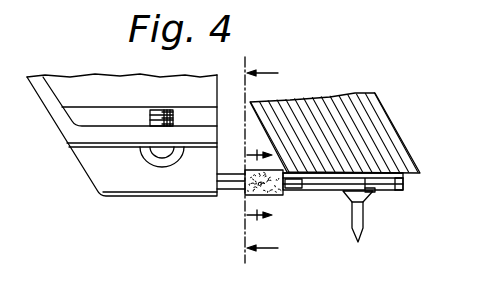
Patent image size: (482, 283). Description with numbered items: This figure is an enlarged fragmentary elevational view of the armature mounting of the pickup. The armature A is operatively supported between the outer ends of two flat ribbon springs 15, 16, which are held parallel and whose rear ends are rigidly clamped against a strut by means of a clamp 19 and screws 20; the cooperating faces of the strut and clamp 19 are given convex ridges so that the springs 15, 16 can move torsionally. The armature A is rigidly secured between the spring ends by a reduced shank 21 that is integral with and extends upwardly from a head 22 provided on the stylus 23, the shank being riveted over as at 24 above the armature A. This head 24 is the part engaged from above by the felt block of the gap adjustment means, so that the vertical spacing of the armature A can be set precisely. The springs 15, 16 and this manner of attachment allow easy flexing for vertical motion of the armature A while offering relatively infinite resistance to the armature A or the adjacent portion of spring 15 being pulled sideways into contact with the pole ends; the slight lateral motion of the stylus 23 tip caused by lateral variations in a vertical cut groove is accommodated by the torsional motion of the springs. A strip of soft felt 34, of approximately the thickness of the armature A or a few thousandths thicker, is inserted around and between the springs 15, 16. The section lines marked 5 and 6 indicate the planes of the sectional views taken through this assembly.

The section line 5- 5 is at (247, 185).
The section line 6- 6 is at (274, 160).
The flat ribbon spring 15 is at (393, 168).
The flat ribbon spring 16 is at (331, 188).
The clamp 19 is at (137, 178).
The screws 20 is at (155, 157).
The reduced shank 21 is at (373, 192).
The head 22 is at (362, 195).
The stylus 23 is at (355, 221).
The riveted-over head 24 is at (358, 170).
The strip of soft felt 34 is at (245, 186).
The armature A is at (404, 181).